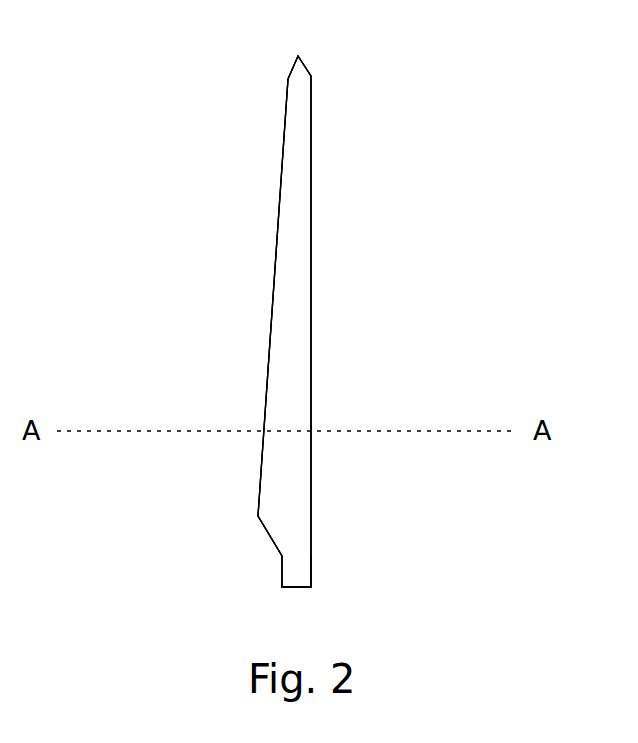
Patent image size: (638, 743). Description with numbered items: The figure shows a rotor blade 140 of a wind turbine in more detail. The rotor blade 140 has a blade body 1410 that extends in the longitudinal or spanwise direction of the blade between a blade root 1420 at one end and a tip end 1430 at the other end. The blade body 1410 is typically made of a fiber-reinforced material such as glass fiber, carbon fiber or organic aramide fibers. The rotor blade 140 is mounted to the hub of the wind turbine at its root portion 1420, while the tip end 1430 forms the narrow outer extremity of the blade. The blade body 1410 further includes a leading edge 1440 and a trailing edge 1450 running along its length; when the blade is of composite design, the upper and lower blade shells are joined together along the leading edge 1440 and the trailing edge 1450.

The rotor blade 140 is at (111, 133).
The blade body 1410 is at (298, 358).
The blade root 1420 is at (311, 558).
The tip end 1430 is at (310, 70).
The leading edge 1440 is at (311, 243).
The trailing edge 1450 is at (271, 319).